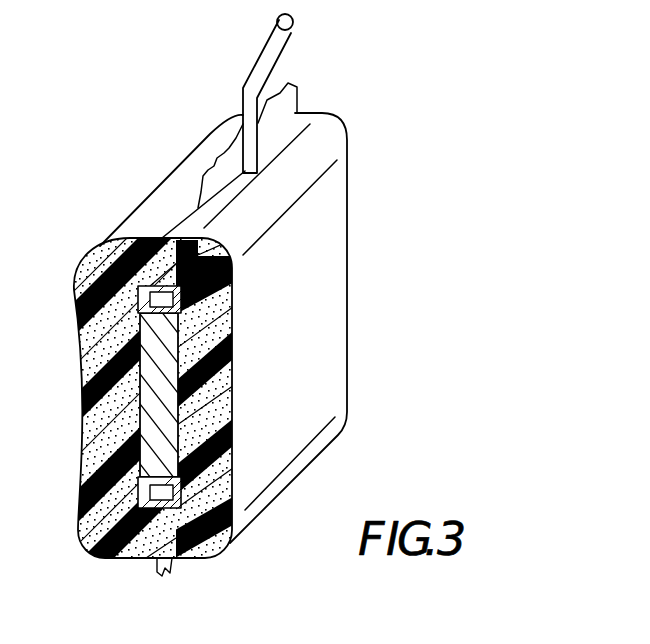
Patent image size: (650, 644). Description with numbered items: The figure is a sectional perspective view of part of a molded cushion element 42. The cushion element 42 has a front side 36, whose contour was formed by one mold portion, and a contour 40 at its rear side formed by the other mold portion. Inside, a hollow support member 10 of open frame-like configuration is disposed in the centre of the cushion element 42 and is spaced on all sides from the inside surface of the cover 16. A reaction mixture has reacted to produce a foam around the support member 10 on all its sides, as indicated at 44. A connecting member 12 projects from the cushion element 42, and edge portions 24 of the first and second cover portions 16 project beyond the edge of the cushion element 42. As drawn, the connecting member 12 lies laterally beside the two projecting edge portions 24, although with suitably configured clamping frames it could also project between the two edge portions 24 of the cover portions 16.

The hollow support member 10 is at (172, 297).
The connecting member 12 is at (268, 57).
The cover portions 16 is at (173, 202).
The edge portions 24 is at (227, 152).
The front side 36 is at (77, 415).
The contour at the rear side 40 is at (327, 391).
The cushion element 42 is at (358, 258).
The foam 44 is at (193, 398).